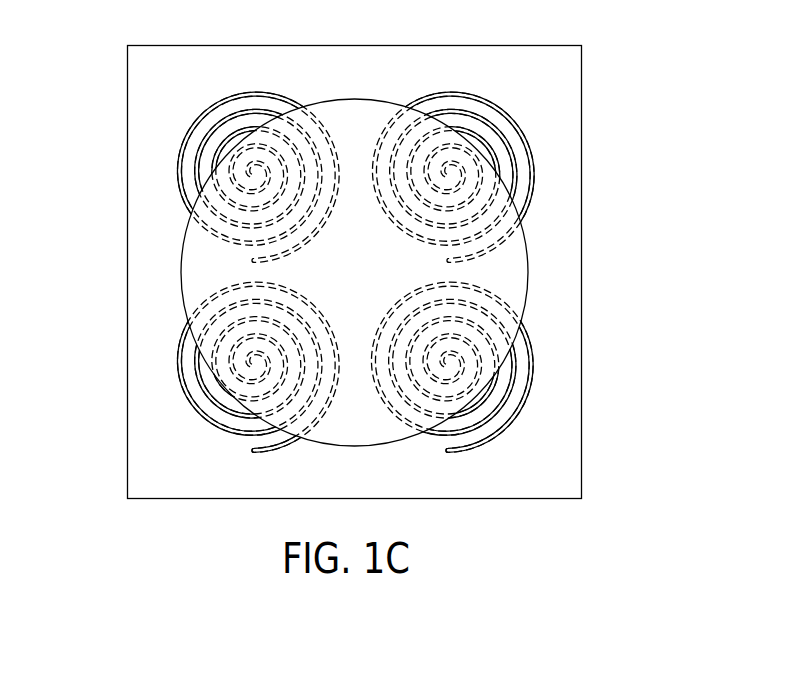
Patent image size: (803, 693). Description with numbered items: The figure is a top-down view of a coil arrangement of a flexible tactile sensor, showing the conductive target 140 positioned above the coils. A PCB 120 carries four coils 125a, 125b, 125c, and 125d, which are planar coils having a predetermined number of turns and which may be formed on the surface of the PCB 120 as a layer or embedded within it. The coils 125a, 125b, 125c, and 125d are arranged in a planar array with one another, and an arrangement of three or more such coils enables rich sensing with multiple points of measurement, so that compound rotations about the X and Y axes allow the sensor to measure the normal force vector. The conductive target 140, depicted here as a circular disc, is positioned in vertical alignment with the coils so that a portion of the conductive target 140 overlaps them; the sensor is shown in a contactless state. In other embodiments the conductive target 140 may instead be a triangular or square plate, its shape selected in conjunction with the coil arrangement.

The PCB 120 is at (582, 121).
The coil 125a is at (231, 132).
The coil 125b is at (471, 133).
The coil 125c is at (189, 367).
The coil 125d is at (519, 367).
The conductive target 140 is at (593, 237).